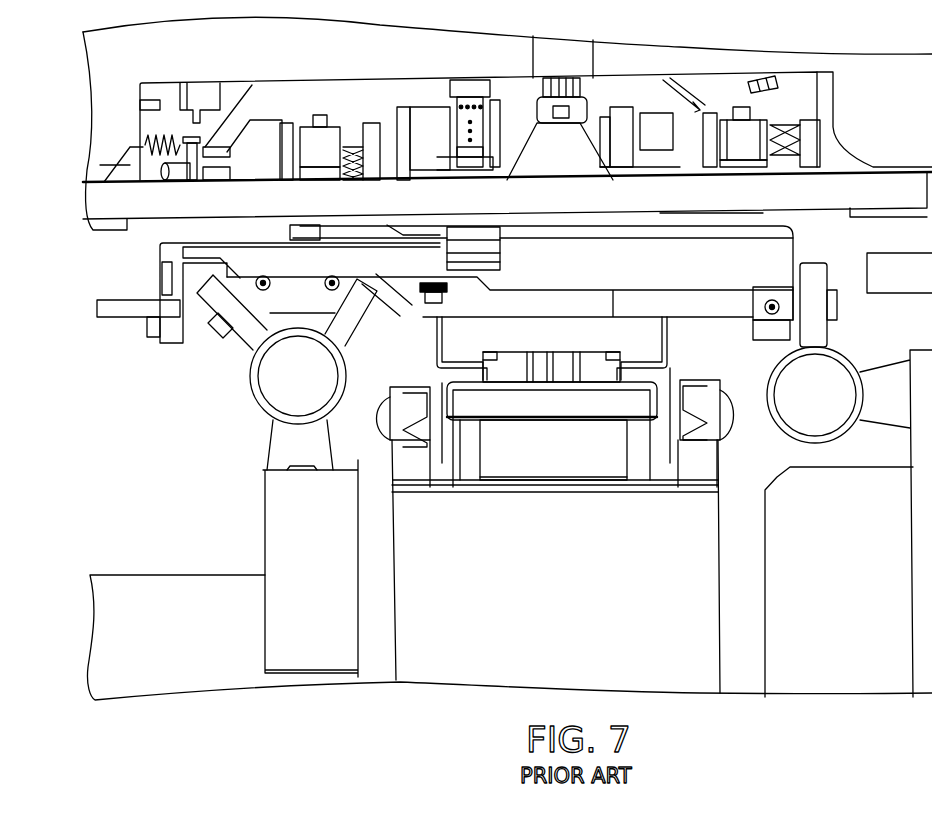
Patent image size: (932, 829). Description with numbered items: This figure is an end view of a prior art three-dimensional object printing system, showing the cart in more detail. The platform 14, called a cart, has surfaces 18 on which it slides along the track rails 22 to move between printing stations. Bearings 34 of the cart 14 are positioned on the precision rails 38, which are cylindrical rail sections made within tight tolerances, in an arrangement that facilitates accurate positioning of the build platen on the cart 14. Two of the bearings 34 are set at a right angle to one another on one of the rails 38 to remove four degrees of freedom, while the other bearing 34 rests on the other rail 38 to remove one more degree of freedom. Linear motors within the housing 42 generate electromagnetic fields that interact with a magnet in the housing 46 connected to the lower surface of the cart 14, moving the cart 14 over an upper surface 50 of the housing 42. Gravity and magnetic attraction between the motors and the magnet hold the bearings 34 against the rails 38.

The platform 14 is at (787, 236).
The bearings 34 is at (240, 287).
The surfaces 18 is at (460, 363).
The precision rails 38 is at (252, 398).
The track rails 22 is at (384, 450).
The housing 46 is at (540, 447).
The upper surface 50 is at (548, 489).
The housing 42 is at (498, 640).